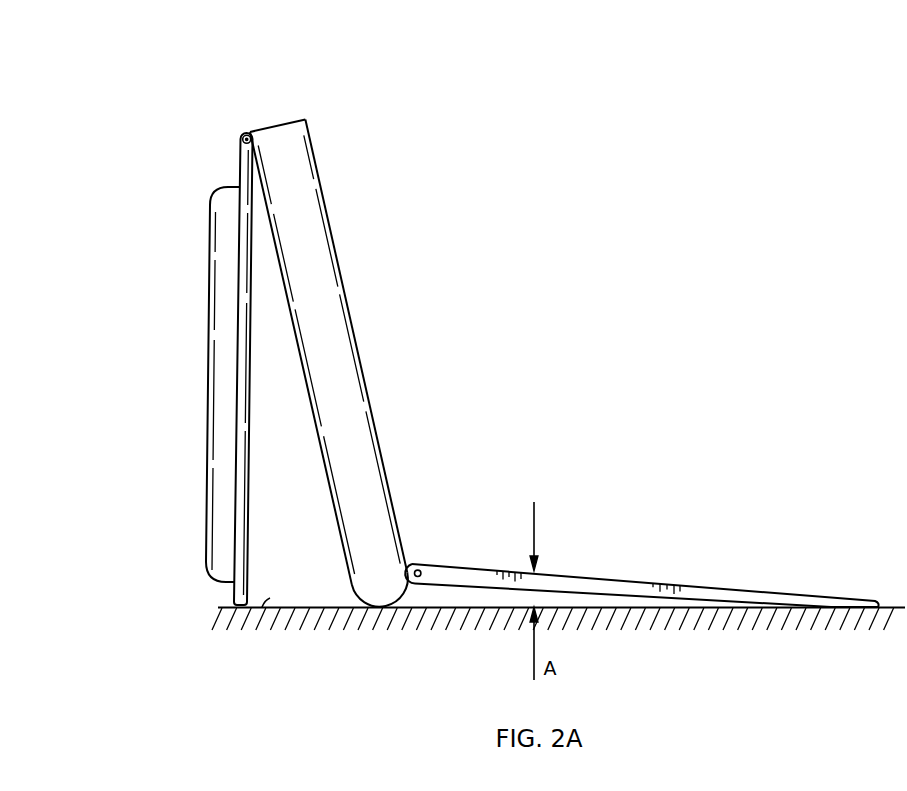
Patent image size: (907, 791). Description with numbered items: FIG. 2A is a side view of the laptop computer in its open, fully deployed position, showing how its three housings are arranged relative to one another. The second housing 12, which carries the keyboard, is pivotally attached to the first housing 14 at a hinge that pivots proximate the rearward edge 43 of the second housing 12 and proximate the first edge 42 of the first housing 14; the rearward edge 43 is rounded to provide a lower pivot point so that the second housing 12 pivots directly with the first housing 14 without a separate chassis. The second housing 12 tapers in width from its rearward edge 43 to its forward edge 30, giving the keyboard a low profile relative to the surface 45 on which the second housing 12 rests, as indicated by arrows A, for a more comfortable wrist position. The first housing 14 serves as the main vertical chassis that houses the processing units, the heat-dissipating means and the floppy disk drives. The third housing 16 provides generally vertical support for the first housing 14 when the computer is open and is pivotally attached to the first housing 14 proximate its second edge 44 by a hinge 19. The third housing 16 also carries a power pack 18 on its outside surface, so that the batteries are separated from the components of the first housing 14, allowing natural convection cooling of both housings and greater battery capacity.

The second housing 12 is at (867, 610).
The first housing 14 is at (314, 206).
The third housing 16 is at (240, 165).
The power pack 18 is at (210, 347).
The hinge 19 is at (243, 140).
The forward edge 30 is at (875, 602).
The first edge 42 is at (377, 588).
The rearward edge 43 is at (420, 581).
The second edge 44 is at (268, 126).
The surface 45 is at (268, 598).